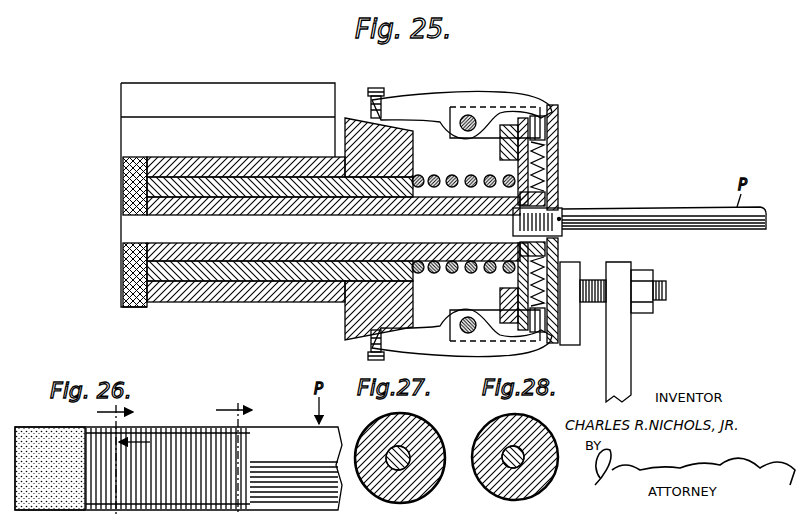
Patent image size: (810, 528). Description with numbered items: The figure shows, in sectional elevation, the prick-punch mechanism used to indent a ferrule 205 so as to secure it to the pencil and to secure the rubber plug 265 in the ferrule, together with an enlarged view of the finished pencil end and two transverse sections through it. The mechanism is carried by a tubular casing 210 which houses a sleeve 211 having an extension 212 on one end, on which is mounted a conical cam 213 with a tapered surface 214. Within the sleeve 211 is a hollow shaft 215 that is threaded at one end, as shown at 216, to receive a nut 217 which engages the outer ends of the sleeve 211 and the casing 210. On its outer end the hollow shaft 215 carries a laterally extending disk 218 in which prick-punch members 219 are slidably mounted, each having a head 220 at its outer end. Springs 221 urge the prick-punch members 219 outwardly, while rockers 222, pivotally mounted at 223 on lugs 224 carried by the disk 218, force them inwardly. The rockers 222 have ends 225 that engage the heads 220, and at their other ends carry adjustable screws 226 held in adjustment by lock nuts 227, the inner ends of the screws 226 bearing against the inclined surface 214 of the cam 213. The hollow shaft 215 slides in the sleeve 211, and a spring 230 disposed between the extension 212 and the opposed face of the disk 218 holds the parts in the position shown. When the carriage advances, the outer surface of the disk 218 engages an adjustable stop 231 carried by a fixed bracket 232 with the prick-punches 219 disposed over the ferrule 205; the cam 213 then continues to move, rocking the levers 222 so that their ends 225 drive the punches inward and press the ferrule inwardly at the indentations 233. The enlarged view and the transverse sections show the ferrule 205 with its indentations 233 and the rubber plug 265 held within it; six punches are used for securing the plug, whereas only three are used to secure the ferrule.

In FIG. 25, the ferrule 205 is at (557, 210).
In FIG. 26, the ferrule 205 is at (175, 426).
In FIG. 25, the tubular casing 210 is at (200, 166).
In FIG. 25, the sleeve 211 is at (190, 282).
In FIG. 25, the extension 212 is at (352, 302).
In FIG. 25, the conical cam 213 is at (350, 141).
In FIG. 25, the tapered surface 214 is at (350, 117).
In FIG. 25, the hollow shaft 215 is at (265, 262).
In FIG. 25, the threaded end 216 is at (128, 259).
In FIG. 25, the nut 217 is at (128, 186).
In FIG. 25, the disk 218 is at (561, 259).
In FIG. 25, the prick-punch members 219 is at (556, 198).
In FIG. 25, the heads 220 is at (553, 107).
In FIG. 25, the springs 221 is at (552, 148).
In FIG. 25, the rockers 222 is at (462, 96).
In FIG. 25, the pivot 223 is at (474, 118).
In FIG. 25, the lugs 224 is at (496, 138).
In FIG. 25, the rocker ends 225 is at (534, 112).
In FIG. 25, the adjustable screws 226 is at (402, 122).
In FIG. 25, the lock nuts 227 is at (377, 90).
In FIG. 25, the spring 230 is at (445, 262).
In FIG. 25, the adjustable stop 231 is at (586, 304).
In FIG. 25, the fixed bracket 232 is at (632, 333).
In FIG. 26, the indentations 233 is at (120, 487).
In FIG. 27, the indentations 233 is at (420, 431).
In FIG. 28, the indentations 233 is at (525, 421).
In FIG. 26, the rubber plug 265 is at (33, 440).